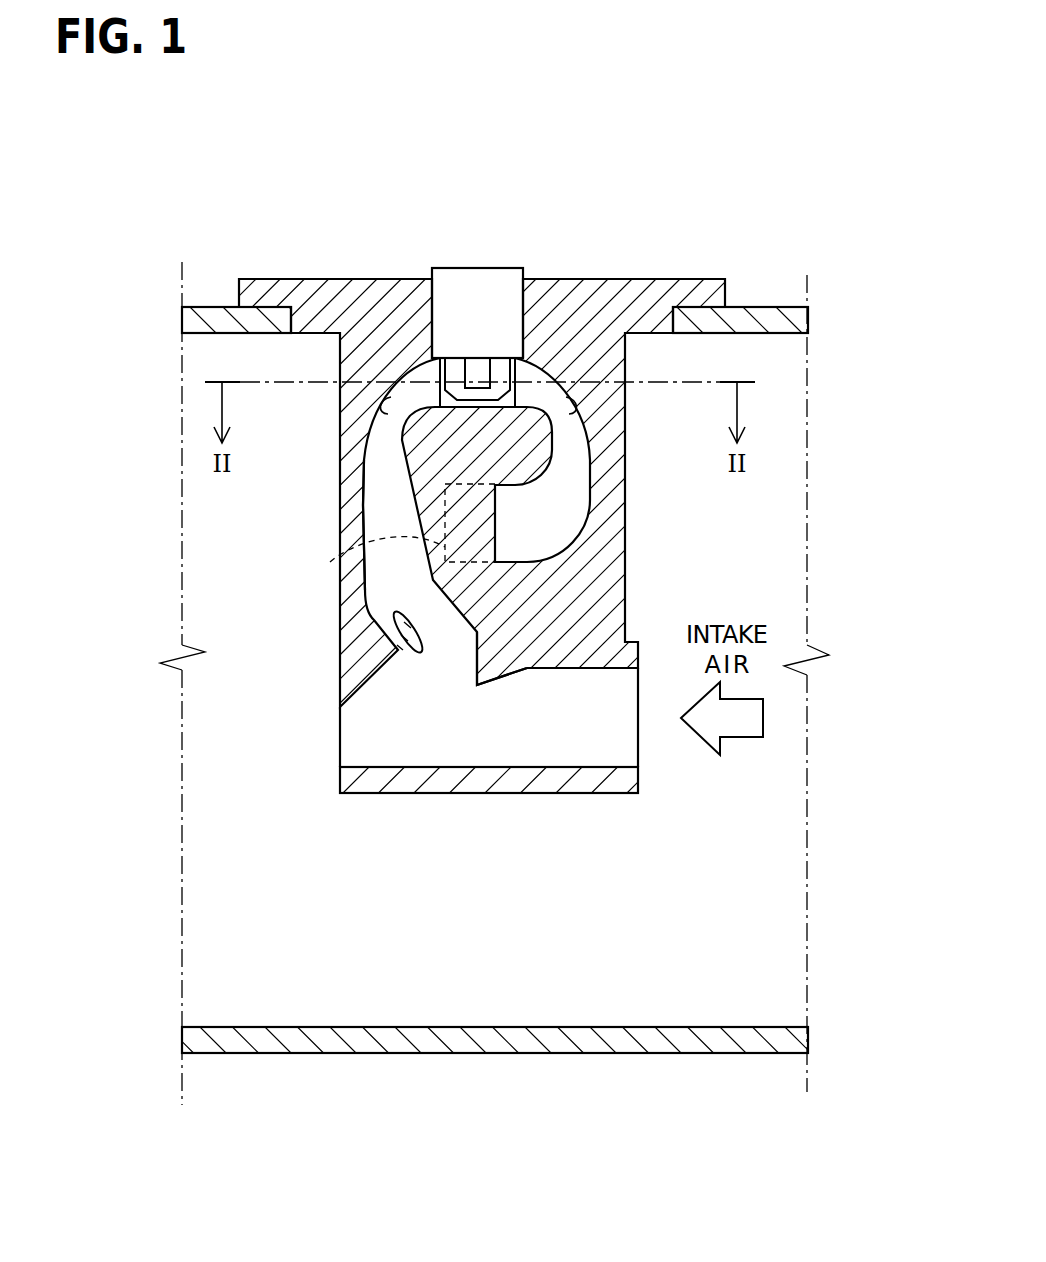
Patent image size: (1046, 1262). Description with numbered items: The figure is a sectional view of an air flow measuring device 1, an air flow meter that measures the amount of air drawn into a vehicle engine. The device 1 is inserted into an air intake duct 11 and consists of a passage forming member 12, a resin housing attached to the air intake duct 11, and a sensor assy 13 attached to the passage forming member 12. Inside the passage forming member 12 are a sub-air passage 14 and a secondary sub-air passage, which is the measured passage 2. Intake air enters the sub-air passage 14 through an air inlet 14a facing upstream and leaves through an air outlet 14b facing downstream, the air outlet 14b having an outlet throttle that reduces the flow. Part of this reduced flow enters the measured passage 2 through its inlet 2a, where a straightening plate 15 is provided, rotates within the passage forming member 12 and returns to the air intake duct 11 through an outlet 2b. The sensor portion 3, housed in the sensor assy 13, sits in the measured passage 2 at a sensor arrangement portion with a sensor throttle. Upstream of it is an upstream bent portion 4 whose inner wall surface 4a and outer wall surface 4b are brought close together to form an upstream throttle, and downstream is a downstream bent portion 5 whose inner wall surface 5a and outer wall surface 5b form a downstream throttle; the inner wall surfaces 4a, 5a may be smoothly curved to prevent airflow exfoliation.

The air flow measuring device 1 is at (654, 248).
The measured passage 2 is at (393, 498).
The inlet 2a is at (447, 642).
The outlet 2b is at (330, 562).
The sensor portion 3 is at (478, 367).
The upstream bent portion 4 is at (396, 412).
The inner wall surface 4a is at (370, 445).
The outer wall surface 4b is at (384, 406).
The downstream bent portion 5 is at (548, 407).
The inner wall surface 5a is at (582, 427).
The outer wall surface 5b is at (577, 405).
The air intake duct 11 is at (765, 317).
The passage forming member 12 is at (607, 547).
The sensor assy 13 is at (463, 297).
The sub-air passage 14 is at (522, 735).
The air inlet 14a is at (630, 735).
The air outlet 14b is at (348, 737).
The straightening plate 15 is at (405, 632).